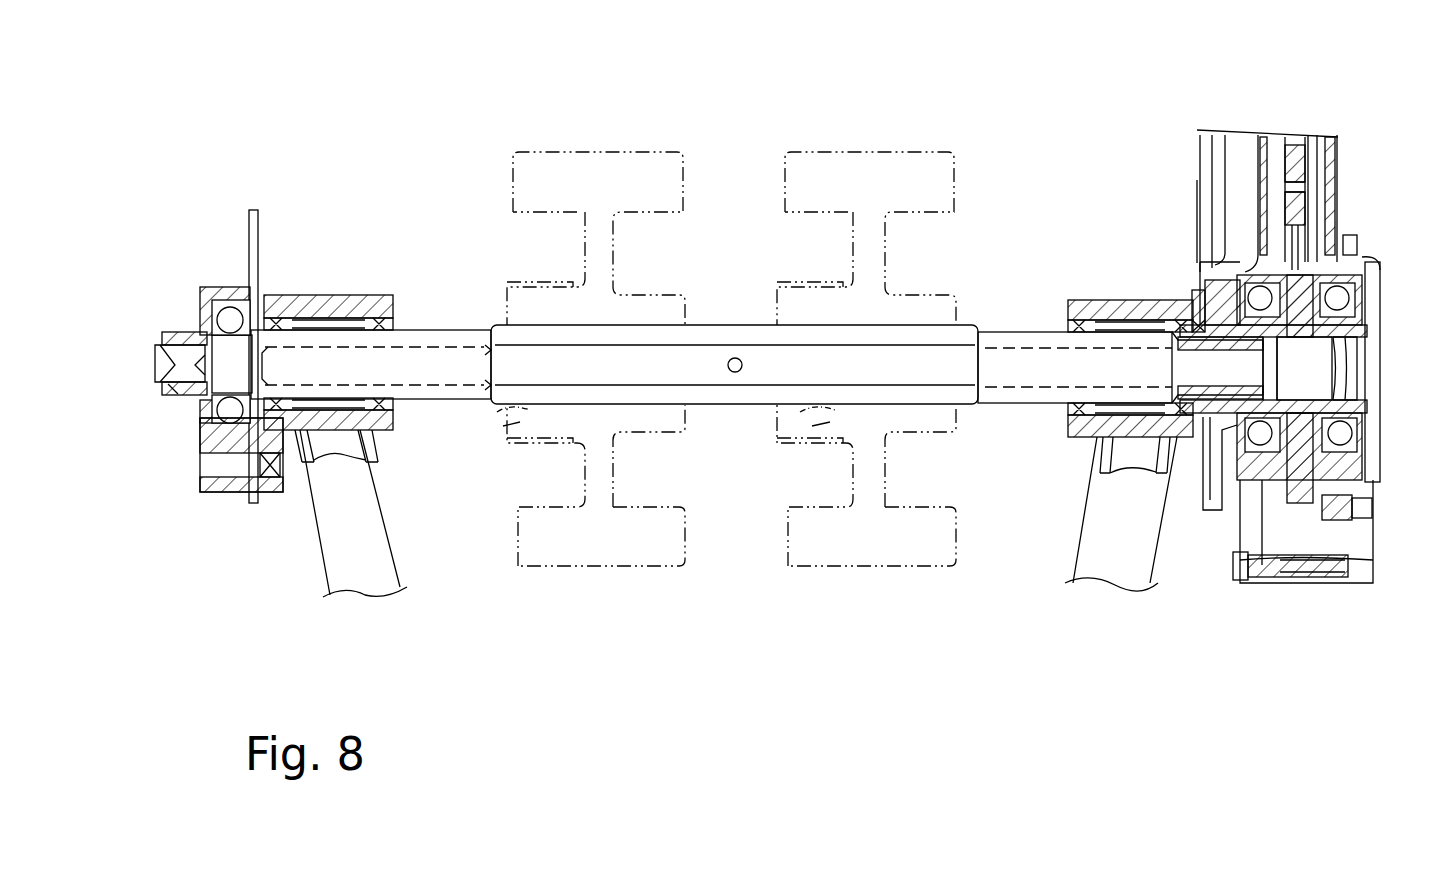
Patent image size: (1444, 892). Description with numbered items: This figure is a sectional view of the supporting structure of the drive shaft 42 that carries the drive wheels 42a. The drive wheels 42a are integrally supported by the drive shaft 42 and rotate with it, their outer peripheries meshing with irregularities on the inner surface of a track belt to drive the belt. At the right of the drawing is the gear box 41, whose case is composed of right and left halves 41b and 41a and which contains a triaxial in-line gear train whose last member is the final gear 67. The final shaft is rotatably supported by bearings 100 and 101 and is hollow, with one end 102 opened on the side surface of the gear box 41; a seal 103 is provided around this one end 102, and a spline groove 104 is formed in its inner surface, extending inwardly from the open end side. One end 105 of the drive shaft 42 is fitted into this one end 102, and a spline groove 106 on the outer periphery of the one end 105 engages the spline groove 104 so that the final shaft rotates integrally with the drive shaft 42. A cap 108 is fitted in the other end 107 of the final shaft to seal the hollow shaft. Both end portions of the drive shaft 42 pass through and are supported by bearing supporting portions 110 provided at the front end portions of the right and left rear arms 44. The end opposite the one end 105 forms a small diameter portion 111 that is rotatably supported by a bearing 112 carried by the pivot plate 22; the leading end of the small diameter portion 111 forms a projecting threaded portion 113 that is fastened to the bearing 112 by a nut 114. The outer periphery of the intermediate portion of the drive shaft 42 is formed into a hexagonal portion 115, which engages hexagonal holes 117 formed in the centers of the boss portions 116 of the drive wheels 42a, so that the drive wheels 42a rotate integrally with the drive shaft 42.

The pivot plate 22 is at (248, 240).
The gear box 41 is at (1360, 150).
The left half of case 41a is at (1262, 582).
The right half of case 41b is at (1330, 583).
The drive shaft 42 is at (470, 290).
The drive wheels 42a is at (627, 570).
The rear arms 44 is at (380, 537).
The final gear 67 is at (1310, 192).
The bearing 100 is at (1215, 290).
The bearing 101 is at (1380, 268).
The one end of final shaft 102 is at (1198, 322).
The seal 103 is at (1200, 300).
The spline groove 104 is at (1288, 338).
The one end of drive shaft 105 is at (1175, 356).
The spline groove 106 is at (1270, 337).
The other end of final shaft 107 is at (1362, 326).
The cap 108 is at (1336, 368).
The bearing supporting portions 110 is at (330, 295).
The small diameter portion 111 is at (212, 365).
The bearing 112 is at (222, 290).
The projecting threaded portion 113 is at (170, 385).
The nut 114 is at (172, 332).
The hexagonal portion 115 is at (733, 335).
The boss portions 116 is at (497, 432).
The hexagonal holes 117 is at (490, 413).